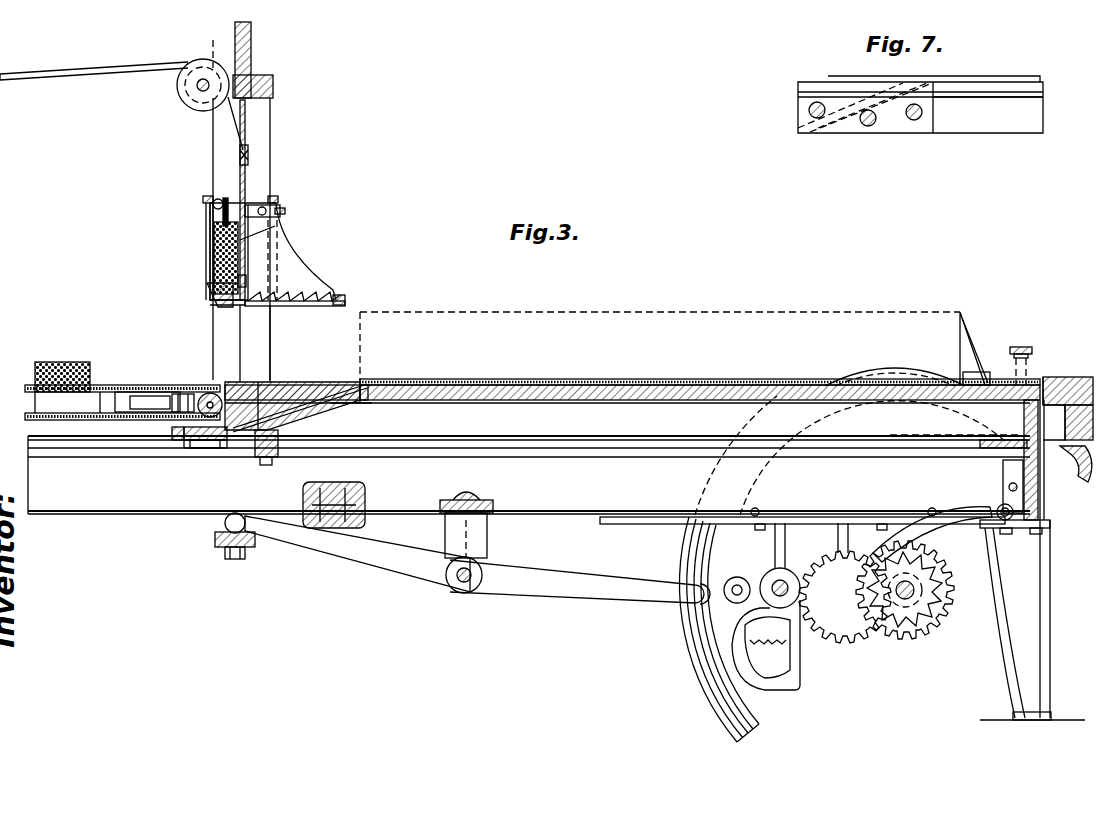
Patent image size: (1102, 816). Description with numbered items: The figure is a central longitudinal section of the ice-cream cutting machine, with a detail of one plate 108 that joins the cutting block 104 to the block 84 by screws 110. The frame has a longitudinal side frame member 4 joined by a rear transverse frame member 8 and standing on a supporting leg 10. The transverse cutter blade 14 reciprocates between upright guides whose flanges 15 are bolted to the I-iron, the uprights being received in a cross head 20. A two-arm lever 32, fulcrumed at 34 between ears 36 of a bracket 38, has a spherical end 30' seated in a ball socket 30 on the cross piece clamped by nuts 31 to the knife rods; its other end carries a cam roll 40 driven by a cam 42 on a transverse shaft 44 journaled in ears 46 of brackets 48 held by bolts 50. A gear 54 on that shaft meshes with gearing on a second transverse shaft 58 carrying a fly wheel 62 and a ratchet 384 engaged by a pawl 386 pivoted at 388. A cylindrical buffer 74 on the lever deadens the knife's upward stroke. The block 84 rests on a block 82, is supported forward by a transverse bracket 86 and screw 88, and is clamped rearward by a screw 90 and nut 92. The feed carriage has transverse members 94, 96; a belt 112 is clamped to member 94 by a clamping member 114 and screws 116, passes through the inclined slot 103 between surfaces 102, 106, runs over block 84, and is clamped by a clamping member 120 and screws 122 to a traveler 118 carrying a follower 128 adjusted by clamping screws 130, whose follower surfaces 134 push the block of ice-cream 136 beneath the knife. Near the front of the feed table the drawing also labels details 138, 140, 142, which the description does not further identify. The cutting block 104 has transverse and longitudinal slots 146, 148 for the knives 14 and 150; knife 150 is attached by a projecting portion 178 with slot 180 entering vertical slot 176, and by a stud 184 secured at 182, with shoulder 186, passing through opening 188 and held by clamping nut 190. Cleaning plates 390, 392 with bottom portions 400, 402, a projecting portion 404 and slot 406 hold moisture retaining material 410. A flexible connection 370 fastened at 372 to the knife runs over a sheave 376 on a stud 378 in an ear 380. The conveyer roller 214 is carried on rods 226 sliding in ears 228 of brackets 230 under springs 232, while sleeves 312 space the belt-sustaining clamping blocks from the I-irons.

In FIG. 3, the side frame member 4 is at (126, 518).
In FIG. 3, the transverse frame member 8 is at (1050, 517).
In FIG. 3, the supporting leg 10 is at (1048, 600).
In FIG. 3, the transverse cutter blade 14 is at (240, 165).
In FIG. 3, the flange 15 is at (218, 170).
In FIG. 3, the cross head 20 is at (275, 80).
In FIG. 3, the ball socket 30 is at (229, 560).
In FIG. 3, the spherical end 30' is at (209, 530).
In FIG. 3, the clamping nut 31 is at (247, 556).
In FIG. 3, the two-arm lever 32 is at (415, 565).
In FIG. 3, the fulcrum 34 is at (470, 590).
In FIG. 3, the ear 36 is at (487, 540).
In FIG. 3, the bracket 38 is at (490, 508).
In FIG. 3, the cam roll 40 is at (730, 597).
In FIG. 3, the cam 42 is at (733, 650).
In FIG. 3, the transverse shaft 44 is at (800, 645).
In FIG. 3, the ear 46 is at (705, 560).
In FIG. 3, the bracket 48 is at (808, 522).
In FIG. 3, the bolt 50 is at (757, 511).
In FIG. 3, the gear 54 is at (850, 640).
In FIG. 3, the transverse shaft 58 is at (915, 630).
In FIG. 3, the fly wheel 62 is at (697, 640).
In FIG. 3, the cylindrical buffer 74 is at (366, 531).
In FIG. 3, the block 82 is at (1080, 472).
In FIG. 3, the block 84 is at (462, 402).
In FIG. 3, the transverse bracket 86 is at (258, 455).
In FIG. 3, the screw 88 is at (272, 462).
In FIG. 3, the screw 90 is at (985, 432).
In FIG. 3, the nut 92 is at (1048, 528).
In FIG. 3, the transverse member 94 is at (203, 448).
In FIG. 3, the transverse member 96 is at (992, 450).
In FIG. 3, the inclined surface 102 is at (340, 402).
In FIG. 3, the inclined slot 103 is at (362, 402).
In FIG. 7, the inclined slot 103 is at (843, 125).
In FIG. 3, the cutting block 104 is at (282, 390).
In FIG. 3, the inclined surface 106 is at (262, 382).
In FIG. 7, the plate 108 is at (905, 125).
In FIG. 7, the screw 110 is at (808, 110).
In FIG. 3, the belt 112 is at (470, 383).
In FIG. 3, the clamping member 114 is at (195, 441).
In FIG. 3, the screw 116 is at (172, 435).
In FIG. 3, the traveler 118 is at (1055, 377).
In FIG. 3, the clamping member 120 is at (1082, 405).
In FIG. 3, the screw 122 is at (1088, 377).
In FIG. 3, the follower 128 is at (978, 355).
In FIG. 3, the clamping screw 130 is at (1022, 347).
In FIG. 3, the follower surface 134 is at (960, 312).
In FIG. 3, the block of ice-cream 136 is at (744, 318).
In FIG. 3, the plate 138 is at (365, 383).
In FIG. 3, the plate 140 is at (370, 385).
In FIG. 3, the guide 142 is at (355, 382).
In FIG. 3, the transverse slot 146 is at (242, 380).
In FIG. 3, the longitudinal slot 148 is at (272, 380).
In FIG. 3, the knife 150 is at (300, 260).
In FIG. 3, the vertical slot 176 is at (233, 305).
In FIG. 3, the projecting portion 178 is at (212, 272).
In FIG. 3, the slot 180 is at (248, 283).
In FIG. 3, the securing point 182 is at (280, 205).
In FIG. 3, the screw-threaded stud 184 is at (205, 206).
In FIG. 3, the shoulder 186 is at (270, 200).
In FIG. 3, the opening 188 is at (218, 203).
In FIG. 3, the clamping nut 190 is at (220, 215).
In FIG. 3, the roller 214 is at (205, 395).
In FIG. 3, the rod 226 is at (140, 398).
In FIG. 3, the ear 228 is at (105, 388).
In FIG. 3, the bracket 230 is at (100, 428).
In FIG. 3, the spring 232 is at (185, 395).
In FIG. 3, the sleeve 312 is at (95, 402).
In FIG. 3, the flexible connection 370 is at (72, 74).
In FIG. 3, the connection point 372 is at (250, 152).
In FIG. 3, the sheave 376 is at (192, 68).
In FIG. 3, the stud 378 is at (197, 86).
In FIG. 3, the ear 380 is at (213, 43).
In FIG. 3, the ratchet 384 is at (950, 610).
In FIG. 3, the pawl 386 is at (968, 512).
In FIG. 3, the pivot 388 is at (1008, 522).
In FIG. 3, the plate 390 is at (285, 213).
In FIG. 3, the plate 392 is at (210, 250).
In FIG. 3, the bottom portion 400 is at (270, 295).
In FIG. 3, the bottom portion 402 is at (207, 290).
In FIG. 3, the projecting portion 404 is at (343, 295).
In FIG. 3, the central longitudinal slot 406 is at (310, 305).
In FIG. 3, the moisture retaining material 410 is at (245, 242).